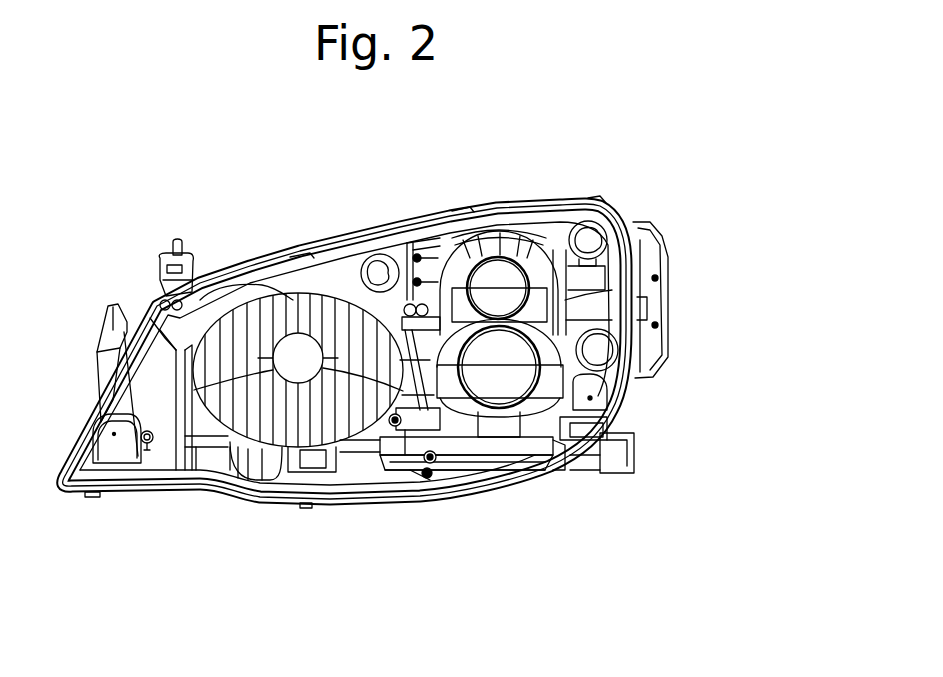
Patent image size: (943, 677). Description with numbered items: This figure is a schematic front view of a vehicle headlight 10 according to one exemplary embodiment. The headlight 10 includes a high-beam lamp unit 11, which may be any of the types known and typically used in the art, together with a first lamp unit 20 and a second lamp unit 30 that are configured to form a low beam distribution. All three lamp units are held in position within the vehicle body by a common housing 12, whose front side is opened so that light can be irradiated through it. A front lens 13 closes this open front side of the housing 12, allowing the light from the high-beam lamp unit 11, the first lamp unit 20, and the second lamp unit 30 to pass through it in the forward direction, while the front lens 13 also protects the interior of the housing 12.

The vehicle headlight 10 is at (574, 72).
The high-beam lamp unit 11 is at (307, 290).
The common housing 12 is at (260, 267).
The front lens 13 is at (464, 468).
The first lamp unit 20 is at (530, 398).
The second lamp unit 30 is at (527, 258).